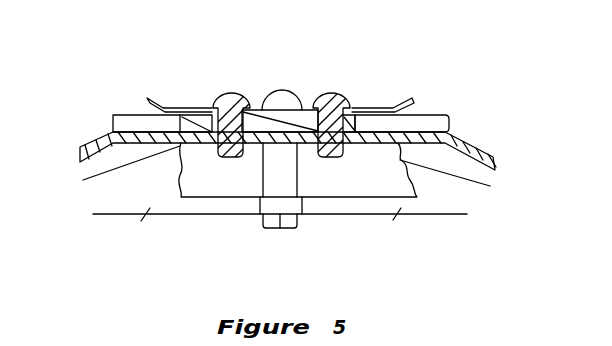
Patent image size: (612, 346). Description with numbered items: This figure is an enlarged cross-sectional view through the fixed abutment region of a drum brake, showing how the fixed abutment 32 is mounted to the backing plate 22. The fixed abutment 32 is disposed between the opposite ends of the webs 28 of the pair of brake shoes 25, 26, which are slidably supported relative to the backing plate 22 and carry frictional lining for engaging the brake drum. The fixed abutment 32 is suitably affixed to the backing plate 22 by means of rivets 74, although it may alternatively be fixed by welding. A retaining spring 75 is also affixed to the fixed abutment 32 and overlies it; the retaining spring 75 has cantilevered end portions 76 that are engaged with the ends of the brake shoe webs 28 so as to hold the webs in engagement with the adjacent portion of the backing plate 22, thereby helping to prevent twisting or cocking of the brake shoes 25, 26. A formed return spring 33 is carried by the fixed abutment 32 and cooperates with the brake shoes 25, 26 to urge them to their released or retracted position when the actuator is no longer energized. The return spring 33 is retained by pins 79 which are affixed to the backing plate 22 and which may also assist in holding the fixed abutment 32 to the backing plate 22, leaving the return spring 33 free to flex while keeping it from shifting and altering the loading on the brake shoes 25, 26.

The backing plate 22 is at (485, 130).
The brake shoe 25 is at (109, 100).
The brake shoe 26 is at (445, 100).
The web 28 is at (124, 112).
The fixed abutment assembly 32 is at (306, 94).
The return spring 33 is at (227, 212).
The rivet 74 is at (237, 91).
The retaining spring 75 is at (177, 104).
The cantilevered end portion 76 is at (149, 100).
The pin 79 is at (298, 172).